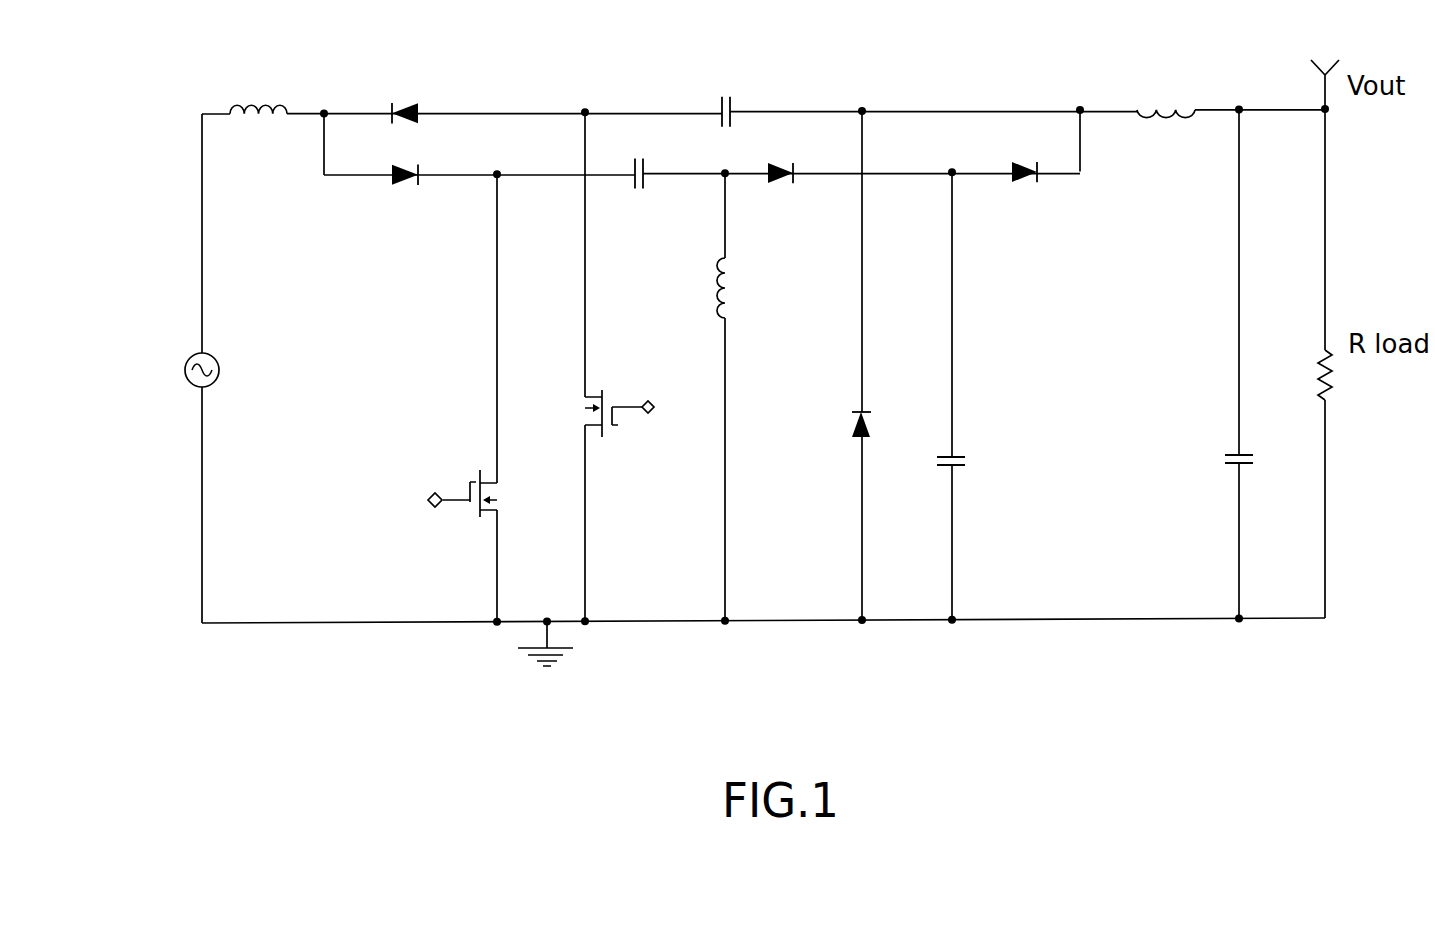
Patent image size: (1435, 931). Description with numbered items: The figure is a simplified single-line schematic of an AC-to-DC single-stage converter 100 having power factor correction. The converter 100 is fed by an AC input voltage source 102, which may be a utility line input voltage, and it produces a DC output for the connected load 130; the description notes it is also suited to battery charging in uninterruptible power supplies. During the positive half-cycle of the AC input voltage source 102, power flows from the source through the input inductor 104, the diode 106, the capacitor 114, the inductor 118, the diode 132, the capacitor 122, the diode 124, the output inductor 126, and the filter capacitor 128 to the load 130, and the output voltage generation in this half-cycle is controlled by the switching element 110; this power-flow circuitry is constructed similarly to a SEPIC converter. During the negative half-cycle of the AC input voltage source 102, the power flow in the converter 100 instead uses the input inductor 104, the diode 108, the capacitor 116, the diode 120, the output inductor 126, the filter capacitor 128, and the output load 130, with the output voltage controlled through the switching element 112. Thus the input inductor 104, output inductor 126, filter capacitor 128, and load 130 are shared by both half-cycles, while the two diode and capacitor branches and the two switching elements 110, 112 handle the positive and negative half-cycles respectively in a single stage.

The single-stage converter 100 is at (316, 686).
The AC input voltage source 102 is at (184, 370).
The input inductor 104 is at (254, 102).
The diode 106 is at (407, 185).
The diode 108 is at (410, 103).
The switching element 110 is at (472, 473).
The switching element 112 is at (608, 397).
The capacitor 114 is at (639, 191).
The capacitor 116 is at (725, 96).
The inductor 118 is at (713, 300).
The diode 120 is at (855, 422).
The capacitor 122 is at (967, 460).
The diode 124 is at (1022, 186).
The output inductor 126 is at (1174, 103).
The filter capacitor 128 is at (1226, 459).
The load 130 is at (1335, 393).
The diode 132 is at (780, 186).